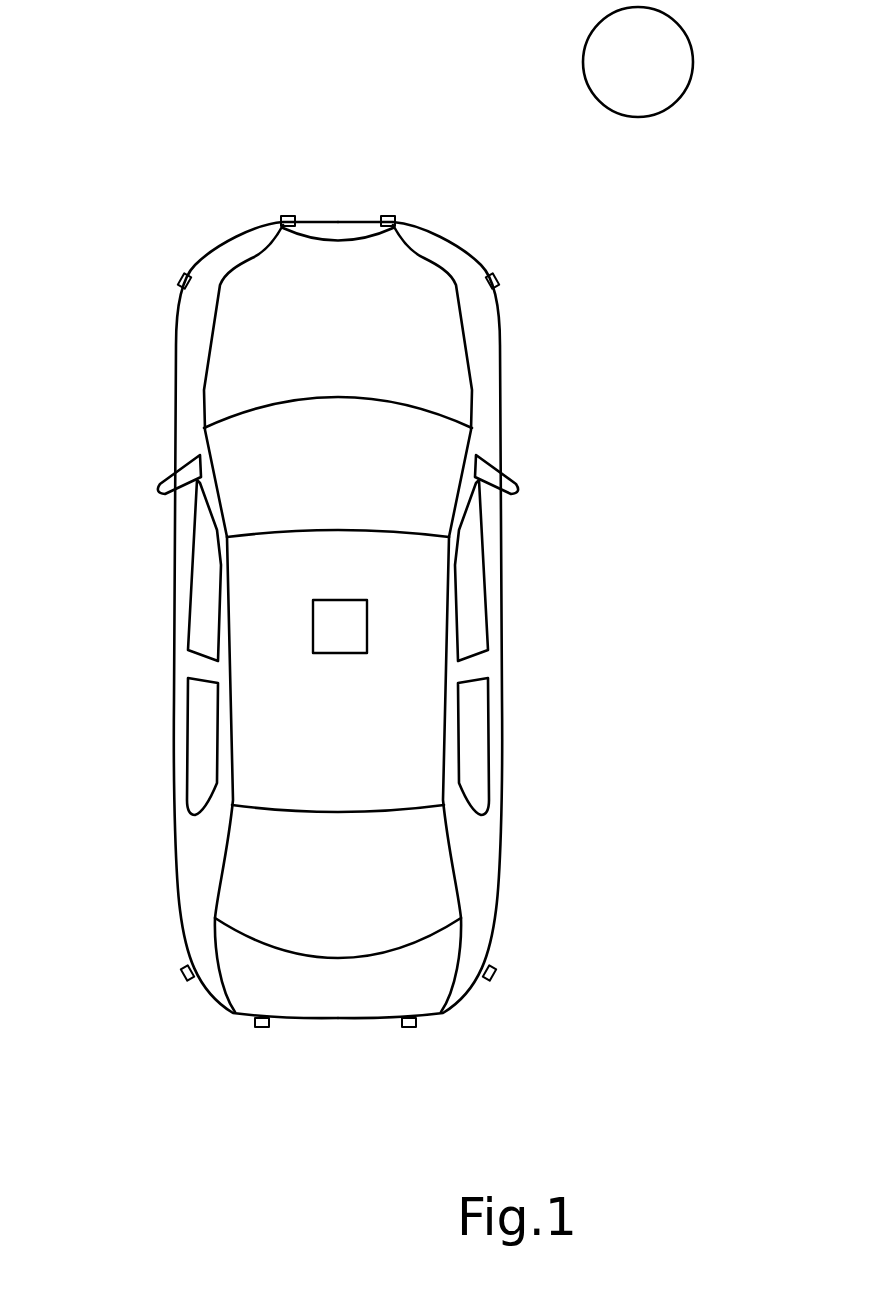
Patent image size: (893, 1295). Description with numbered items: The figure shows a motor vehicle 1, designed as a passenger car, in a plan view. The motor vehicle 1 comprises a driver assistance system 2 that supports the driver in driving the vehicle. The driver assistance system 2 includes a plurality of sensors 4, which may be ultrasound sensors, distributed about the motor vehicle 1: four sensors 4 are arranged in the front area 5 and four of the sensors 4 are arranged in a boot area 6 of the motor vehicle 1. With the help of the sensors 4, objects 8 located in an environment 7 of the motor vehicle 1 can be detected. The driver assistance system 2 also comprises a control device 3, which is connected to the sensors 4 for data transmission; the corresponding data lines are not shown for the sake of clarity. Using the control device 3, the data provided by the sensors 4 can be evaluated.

The motor vehicle 1 is at (338, 221).
The driver assistance system 2 is at (160, 165).
The control device 3 is at (367, 622).
The sensors 4 is at (286, 216).
The front area 5 is at (353, 152).
The boot area 6 is at (318, 1046).
The environment 7 is at (339, 599).
The objects 8 is at (678, 100).